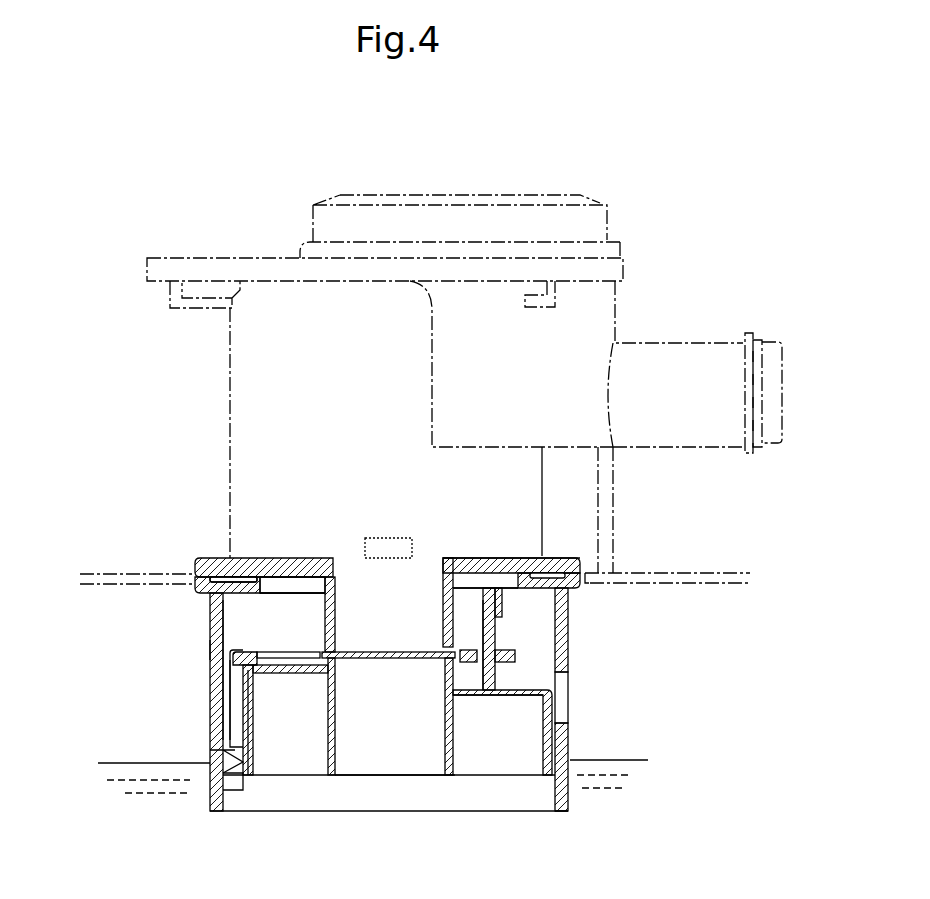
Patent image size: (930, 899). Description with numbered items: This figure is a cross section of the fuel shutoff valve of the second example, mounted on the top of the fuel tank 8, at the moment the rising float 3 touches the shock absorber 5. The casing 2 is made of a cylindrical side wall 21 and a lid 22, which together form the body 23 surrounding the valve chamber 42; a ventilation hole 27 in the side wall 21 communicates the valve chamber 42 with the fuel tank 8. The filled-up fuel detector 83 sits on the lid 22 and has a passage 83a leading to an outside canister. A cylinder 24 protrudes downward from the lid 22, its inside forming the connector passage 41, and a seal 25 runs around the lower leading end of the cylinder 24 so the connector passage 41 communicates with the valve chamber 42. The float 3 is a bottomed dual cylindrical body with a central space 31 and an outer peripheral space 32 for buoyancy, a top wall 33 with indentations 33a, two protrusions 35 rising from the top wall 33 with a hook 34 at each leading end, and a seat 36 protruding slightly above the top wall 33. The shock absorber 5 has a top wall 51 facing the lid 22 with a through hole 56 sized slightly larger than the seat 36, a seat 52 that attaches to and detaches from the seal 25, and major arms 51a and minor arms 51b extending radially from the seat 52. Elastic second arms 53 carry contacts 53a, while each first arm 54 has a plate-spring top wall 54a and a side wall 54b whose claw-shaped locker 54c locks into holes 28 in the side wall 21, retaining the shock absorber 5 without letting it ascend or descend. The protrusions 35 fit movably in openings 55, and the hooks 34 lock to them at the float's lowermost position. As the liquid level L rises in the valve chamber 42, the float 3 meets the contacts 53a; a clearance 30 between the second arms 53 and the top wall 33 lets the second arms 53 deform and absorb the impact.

The casing 2 is at (578, 817).
The float 3 is at (456, 788).
The shock absorber 5 is at (222, 703).
The fuel tank 8 is at (713, 572).
The side wall 21 is at (220, 733).
The lid 22 is at (580, 562).
The body 23 is at (497, 620).
The cylinder 24 is at (330, 560).
The seal 25 is at (433, 625).
The ventilation hole 27 is at (562, 685).
The holes 28 is at (217, 757).
The clearance 30 is at (253, 690).
The central space 31 is at (388, 762).
The outer peripheral space 32 is at (317, 763).
The top wall 33 is at (300, 660).
The indentations 33a is at (515, 662).
The hook 34 is at (502, 605).
The protrusions 35 is at (488, 637).
The seat 36 is at (365, 630).
The connector passage 41 is at (358, 578).
The valve chamber 42 is at (212, 652).
The top wall 51 is at (315, 652).
The major arms 51a is at (285, 655).
The minor arms 51b is at (462, 600).
The seat 52 is at (455, 692).
The second arms 53 is at (268, 645).
The contacts 53a is at (268, 672).
The first arm 54 is at (225, 640).
The top wall 54a is at (237, 630).
The side wall 54b is at (230, 688).
The locker 54c is at (212, 770).
The openings 55 is at (512, 715).
The through hole 56 is at (492, 697).
The filled-up fuel detector 83 is at (617, 317).
The passage 83a is at (782, 427).
The liquid level L is at (648, 755).